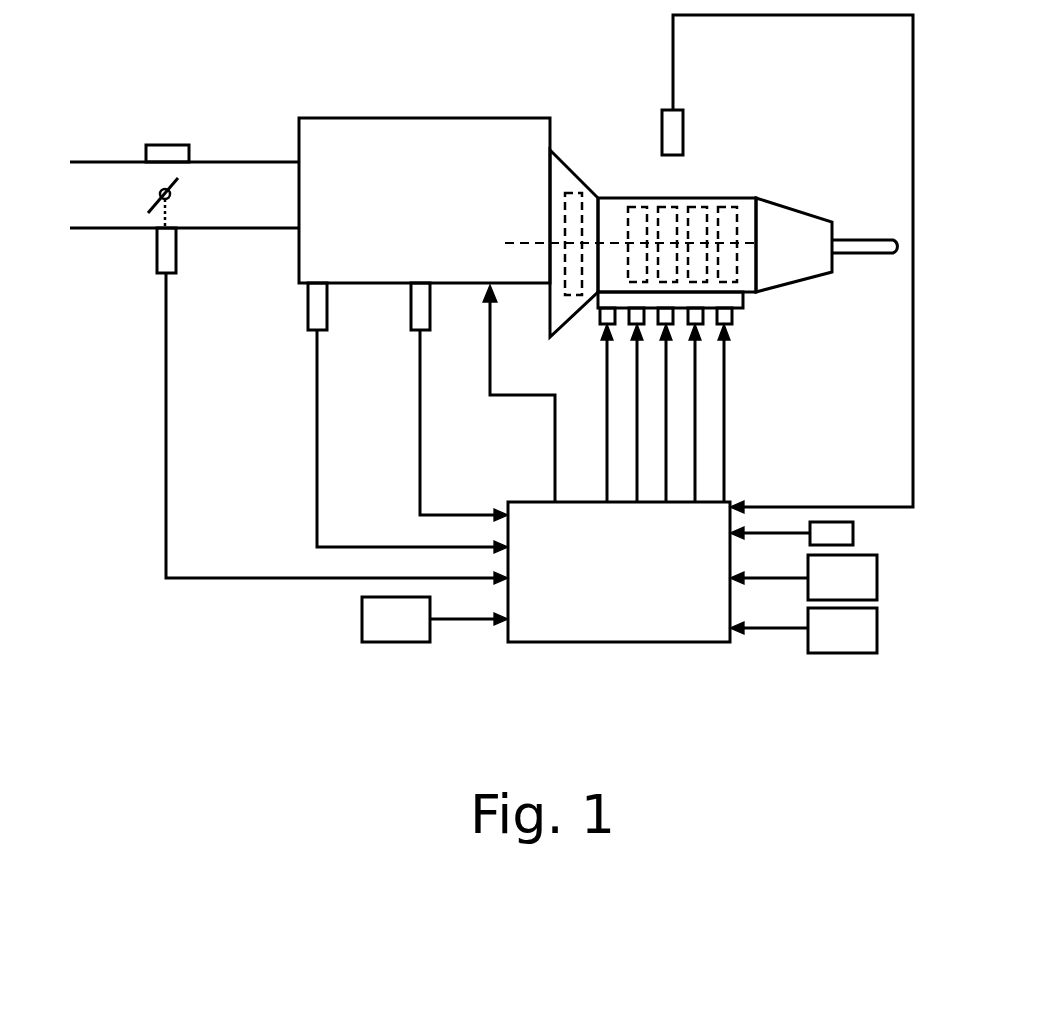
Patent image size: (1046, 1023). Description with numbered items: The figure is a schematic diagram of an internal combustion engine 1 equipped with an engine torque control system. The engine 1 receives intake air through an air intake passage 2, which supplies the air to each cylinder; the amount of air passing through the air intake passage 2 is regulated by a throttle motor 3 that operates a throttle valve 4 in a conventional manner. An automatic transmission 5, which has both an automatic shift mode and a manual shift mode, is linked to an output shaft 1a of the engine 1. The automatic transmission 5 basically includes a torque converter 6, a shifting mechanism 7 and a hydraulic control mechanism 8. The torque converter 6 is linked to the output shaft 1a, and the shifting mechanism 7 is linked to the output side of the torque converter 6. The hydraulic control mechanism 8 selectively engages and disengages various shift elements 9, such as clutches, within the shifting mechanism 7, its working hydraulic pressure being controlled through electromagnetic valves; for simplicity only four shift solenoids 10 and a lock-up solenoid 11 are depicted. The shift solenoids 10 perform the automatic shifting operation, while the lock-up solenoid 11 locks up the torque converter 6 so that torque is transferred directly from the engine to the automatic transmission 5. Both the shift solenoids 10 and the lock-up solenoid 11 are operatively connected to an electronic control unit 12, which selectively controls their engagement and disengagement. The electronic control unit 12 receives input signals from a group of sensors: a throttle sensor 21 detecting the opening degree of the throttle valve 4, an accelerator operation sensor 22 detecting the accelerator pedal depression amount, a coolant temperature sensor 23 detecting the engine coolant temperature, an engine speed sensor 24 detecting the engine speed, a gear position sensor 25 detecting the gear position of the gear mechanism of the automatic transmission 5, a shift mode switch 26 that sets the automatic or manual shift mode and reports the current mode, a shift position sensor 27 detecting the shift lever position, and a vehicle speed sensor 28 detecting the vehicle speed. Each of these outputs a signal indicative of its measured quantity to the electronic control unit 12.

The internal combustion engine 1 is at (445, 117).
The output shaft 1a is at (524, 241).
The air intake passage 2 is at (242, 162).
The throttle motor 3 is at (189, 148).
The throttle valve 4 is at (148, 200).
The automatic transmission 5 is at (790, 116).
The torque converter 6 is at (579, 176).
The shifting mechanism 7 is at (766, 198).
The hydraulic control mechanism 8 is at (745, 300).
The shift elements 9 is at (700, 198).
The shift solenoids 10 is at (700, 328).
The lock-up solenoid 11 is at (600, 330).
The electronic control unit 12 is at (734, 500).
The throttle sensor 21 is at (176, 273).
The accelerator operation sensor 22 is at (362, 624).
The coolant temperature sensor 23 is at (325, 330).
The engine speed sensor 24 is at (428, 330).
The gear position sensor 25 is at (683, 122).
The shift mode switch 26 is at (855, 535).
The shift position sensor 27 is at (879, 582).
The vehicle speed sensor 28 is at (879, 629).